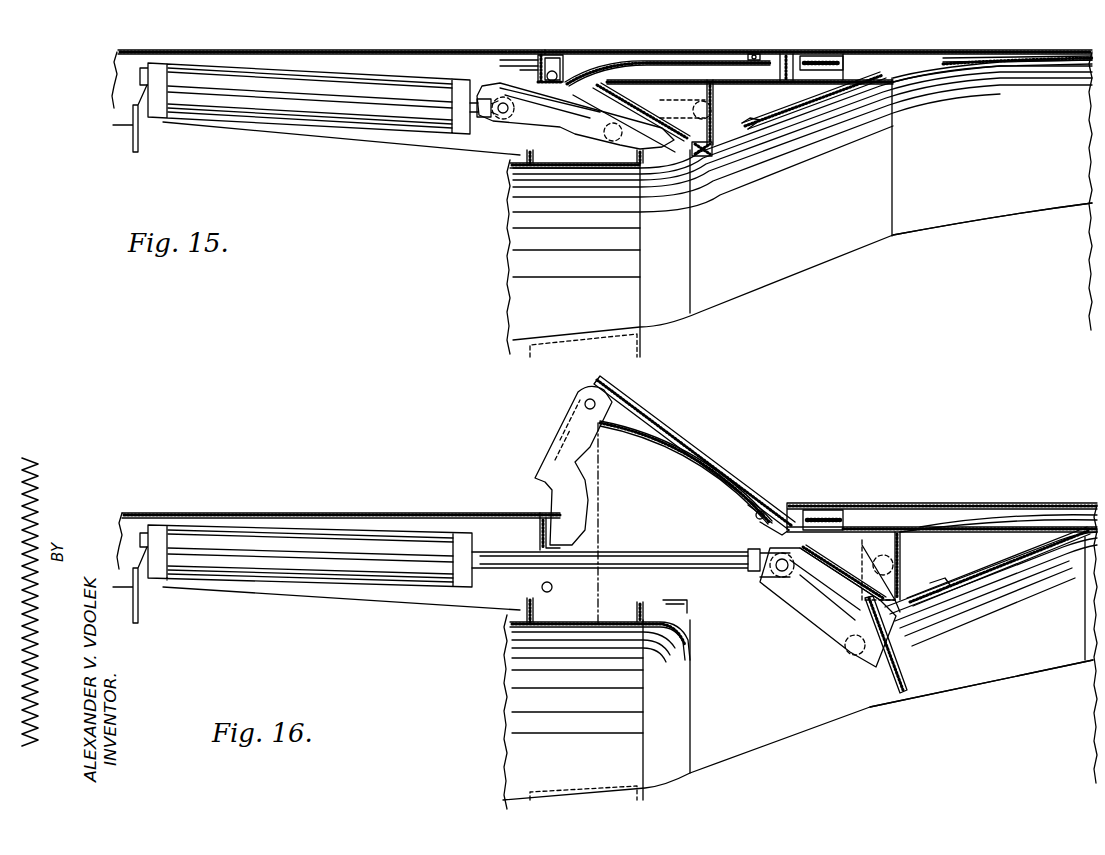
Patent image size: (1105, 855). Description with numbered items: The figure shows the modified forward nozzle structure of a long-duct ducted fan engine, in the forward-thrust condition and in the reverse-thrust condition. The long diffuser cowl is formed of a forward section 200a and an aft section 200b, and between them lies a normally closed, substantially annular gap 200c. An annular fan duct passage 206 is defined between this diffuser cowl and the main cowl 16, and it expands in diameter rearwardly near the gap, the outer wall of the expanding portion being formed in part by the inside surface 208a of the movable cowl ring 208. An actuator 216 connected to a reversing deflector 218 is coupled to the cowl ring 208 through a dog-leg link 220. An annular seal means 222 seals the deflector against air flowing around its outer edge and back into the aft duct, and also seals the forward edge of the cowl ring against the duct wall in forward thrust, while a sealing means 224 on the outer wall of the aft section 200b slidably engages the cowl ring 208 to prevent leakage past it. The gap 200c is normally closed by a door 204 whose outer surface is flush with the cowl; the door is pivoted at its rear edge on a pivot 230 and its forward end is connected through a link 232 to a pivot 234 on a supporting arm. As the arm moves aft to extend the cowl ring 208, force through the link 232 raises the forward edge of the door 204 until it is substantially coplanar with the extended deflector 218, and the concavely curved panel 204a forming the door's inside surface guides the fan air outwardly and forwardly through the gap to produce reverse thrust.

In FIG. 15, the main cowl 16 is at (1003, 210).
In FIG. 16, the main cowl 16 is at (1020, 663).
In FIG. 16, the forward section of the diffuser cowl 200a is at (290, 512).
In FIG. 15, the aft section of the diffuser cowl 200b is at (960, 50).
In FIG. 16, the aft section of the diffuser cowl 200b is at (918, 503).
In FIG. 16, the annular gap 200c is at (690, 519).
In FIG. 16, the door 204 is at (695, 455).
In FIG. 15, the concavely curved panel 204a is at (652, 70).
In FIG. 16, the concavely curved panel 204a is at (665, 460).
In FIG. 15, the fan duct passage 206 is at (607, 274).
In FIG. 16, the fan duct passage 206 is at (609, 727).
In FIG. 15, the movable cowl ring 208 is at (790, 76).
In FIG. 16, the movable cowl ring 208 is at (1030, 636).
In FIG. 15, the inside surface of the movable cowl ring 208a is at (810, 120).
In FIG. 16, the inside surface of the movable cowl ring 208a is at (998, 566).
In FIG. 15, the actuator 216 is at (310, 110).
In FIG. 16, the actuator 216 is at (350, 588).
In FIG. 15, the reversing deflector 218 is at (598, 128).
In FIG. 16, the reversing deflector 218 is at (825, 615).
In FIG. 15, the dog-leg link 220 is at (690, 80).
In FIG. 16, the dog-leg link 220 is at (868, 540).
In FIG. 15, the annular seal means 222 is at (705, 158).
In FIG. 16, the annular seal means 222 is at (892, 608).
In FIG. 15, the sealing means 224 is at (845, 68).
In FIG. 16, the sealing means 224 is at (830, 510).
In FIG. 15, the pivot 230 is at (754, 54).
In FIG. 16, the pivot 230 is at (760, 510).
In FIG. 15, the link 232 is at (465, 72).
In FIG. 16, the link 232 is at (565, 498).
In FIG. 16, the pivot 234 is at (542, 587).